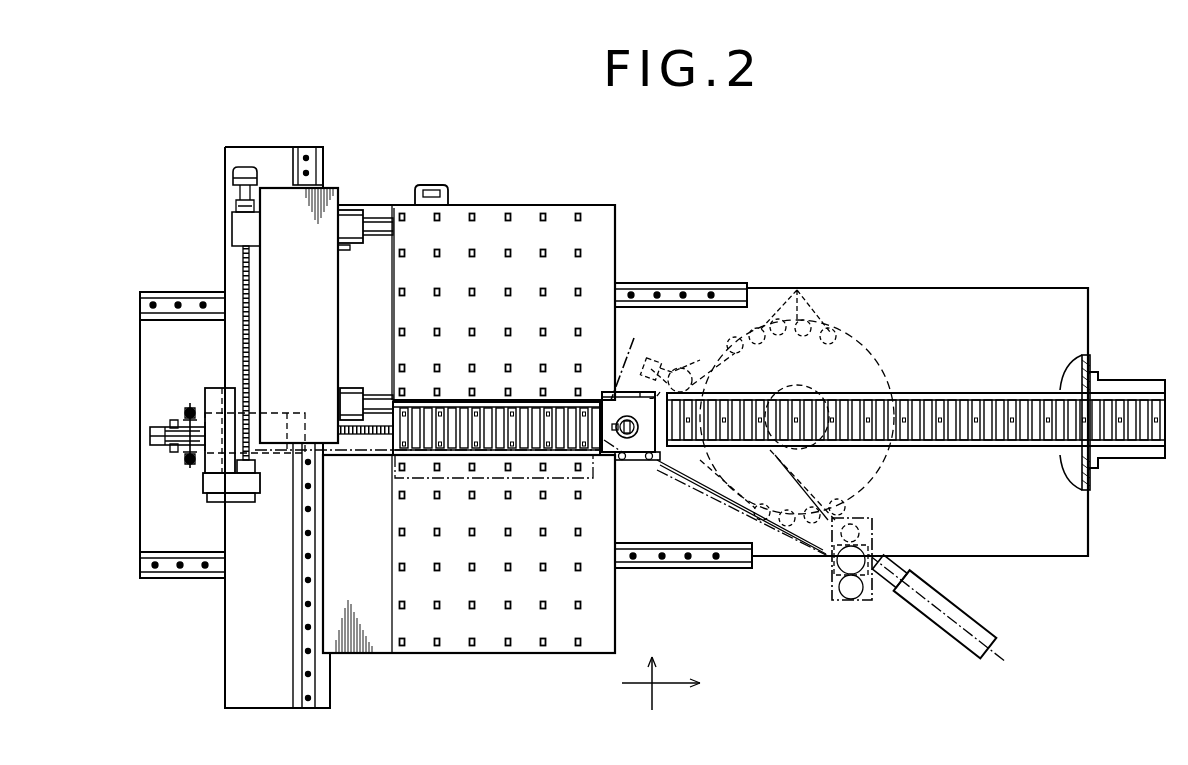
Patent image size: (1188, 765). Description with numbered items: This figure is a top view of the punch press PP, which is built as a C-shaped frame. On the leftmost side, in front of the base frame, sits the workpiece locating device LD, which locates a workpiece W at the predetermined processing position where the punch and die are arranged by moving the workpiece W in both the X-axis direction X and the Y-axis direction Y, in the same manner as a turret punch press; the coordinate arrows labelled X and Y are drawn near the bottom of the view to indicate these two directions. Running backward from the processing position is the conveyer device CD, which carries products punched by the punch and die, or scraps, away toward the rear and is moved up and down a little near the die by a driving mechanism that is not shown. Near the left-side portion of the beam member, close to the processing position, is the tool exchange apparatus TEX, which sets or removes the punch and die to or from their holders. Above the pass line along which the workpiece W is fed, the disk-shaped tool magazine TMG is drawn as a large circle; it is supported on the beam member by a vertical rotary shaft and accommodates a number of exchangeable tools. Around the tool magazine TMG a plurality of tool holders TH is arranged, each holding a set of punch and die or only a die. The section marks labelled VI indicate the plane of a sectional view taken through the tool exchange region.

The workpiece locating device LD is at (339, 183).
The workpiece W is at (592, 320).
The section line VI- VI is at (628, 347).
The tool exchange apparatus TEX is at (652, 353).
The tool holder TH is at (797, 290).
The tool magazine TMG is at (845, 327).
The punch press PP is at (936, 263).
The conveyer device CD is at (988, 400).
The X-axis direction X is at (652, 670).
The Y-axis direction Y is at (669, 684).